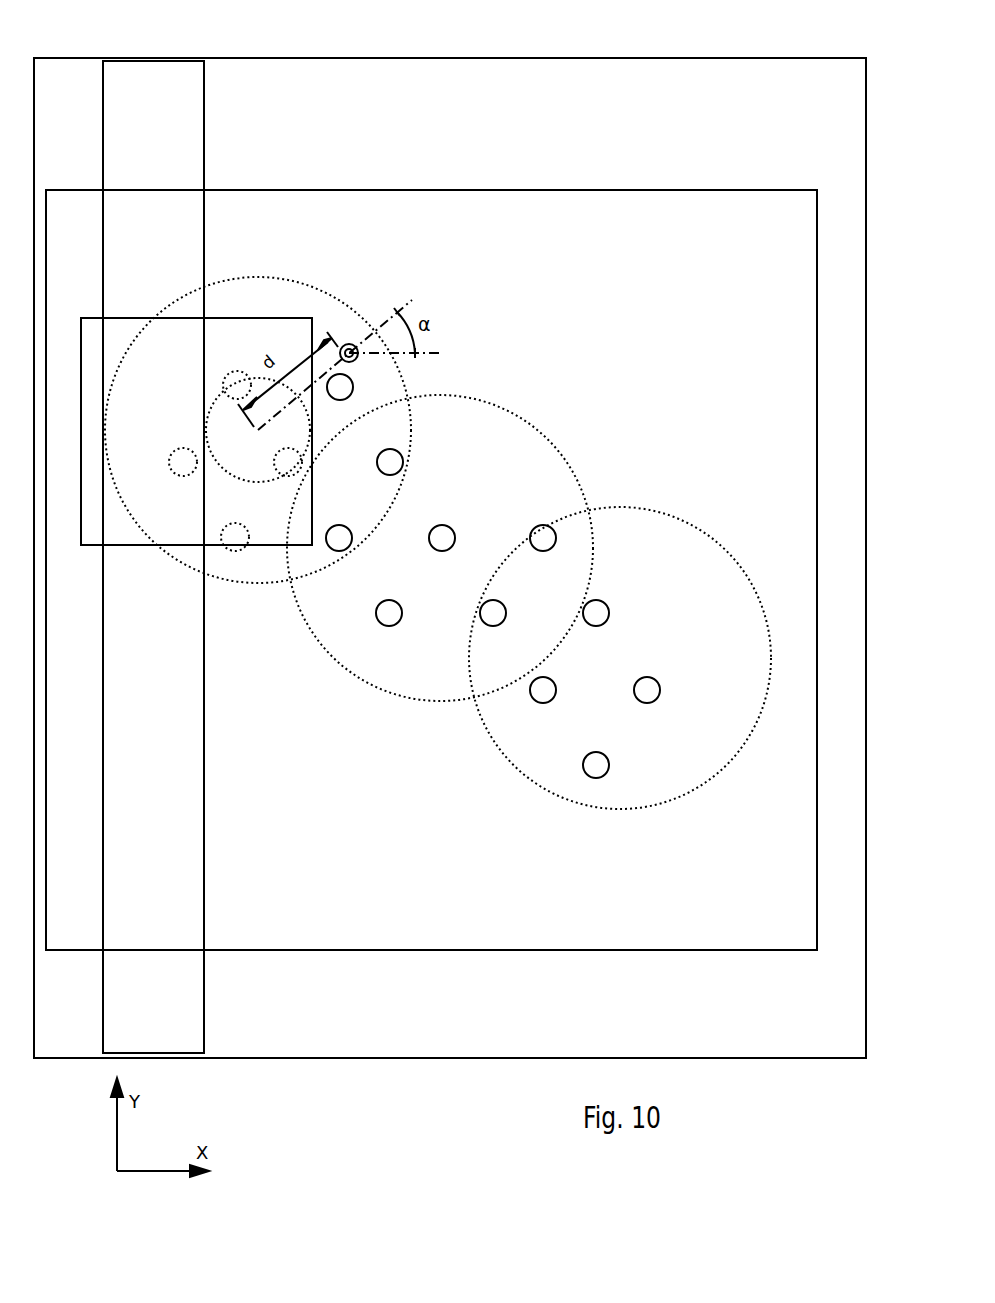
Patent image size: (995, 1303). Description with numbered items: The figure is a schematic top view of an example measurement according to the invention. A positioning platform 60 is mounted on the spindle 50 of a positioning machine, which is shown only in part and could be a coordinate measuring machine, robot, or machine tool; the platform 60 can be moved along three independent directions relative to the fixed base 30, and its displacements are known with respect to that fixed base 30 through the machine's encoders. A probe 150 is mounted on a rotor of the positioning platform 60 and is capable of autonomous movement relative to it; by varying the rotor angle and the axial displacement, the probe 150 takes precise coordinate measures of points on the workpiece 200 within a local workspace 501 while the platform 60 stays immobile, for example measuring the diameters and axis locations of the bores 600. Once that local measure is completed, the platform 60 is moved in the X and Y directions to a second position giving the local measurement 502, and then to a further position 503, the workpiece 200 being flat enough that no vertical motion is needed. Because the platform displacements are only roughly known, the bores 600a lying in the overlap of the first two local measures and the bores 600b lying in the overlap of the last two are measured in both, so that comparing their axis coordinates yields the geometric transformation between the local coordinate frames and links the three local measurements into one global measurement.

The fixed base 30 is at (765, 83).
The workpiece 200 is at (753, 277).
The spindle 50 is at (92, 352).
The positioning platform 60 is at (218, 437).
The probe 150 is at (357, 360).
The local workspace 501 is at (333, 298).
The local measurement 502 is at (527, 443).
The further position 503 is at (682, 540).
The bores 600 is at (610, 764).
The bores in first overlap 600a is at (353, 545).
The bores in second overlap 600b is at (548, 550).